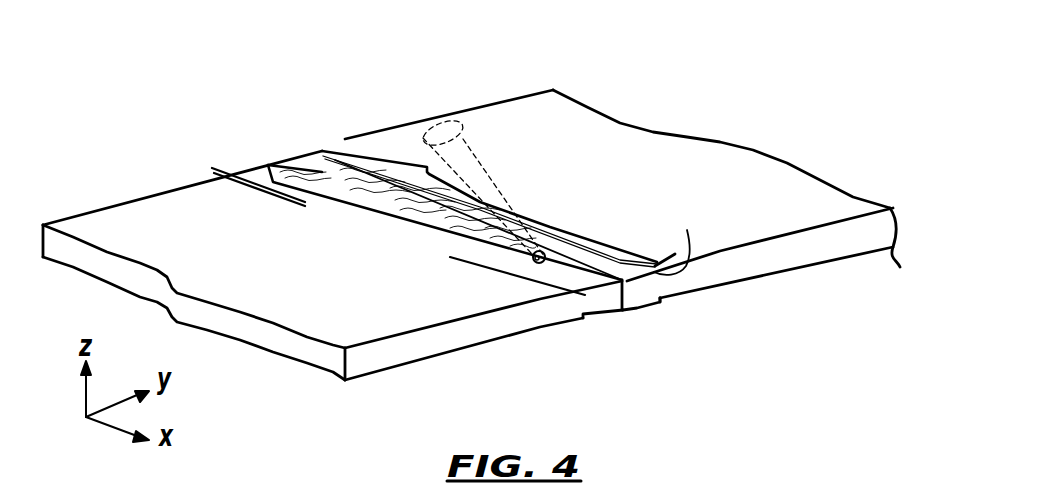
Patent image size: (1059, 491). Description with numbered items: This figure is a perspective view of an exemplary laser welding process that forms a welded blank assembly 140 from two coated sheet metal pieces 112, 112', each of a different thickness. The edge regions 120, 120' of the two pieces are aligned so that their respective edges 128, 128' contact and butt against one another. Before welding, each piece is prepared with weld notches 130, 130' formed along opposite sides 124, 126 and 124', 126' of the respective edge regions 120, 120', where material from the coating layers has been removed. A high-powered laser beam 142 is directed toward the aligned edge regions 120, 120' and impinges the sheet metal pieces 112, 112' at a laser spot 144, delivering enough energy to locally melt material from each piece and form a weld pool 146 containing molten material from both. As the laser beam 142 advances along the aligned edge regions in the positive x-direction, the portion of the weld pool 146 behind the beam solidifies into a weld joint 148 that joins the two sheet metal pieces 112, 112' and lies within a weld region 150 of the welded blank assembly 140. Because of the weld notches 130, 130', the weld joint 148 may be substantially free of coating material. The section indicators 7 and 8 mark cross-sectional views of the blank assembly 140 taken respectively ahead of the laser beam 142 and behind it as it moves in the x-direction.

The coated sheet metal piece 112 is at (622, 185).
The coated sheet metal piece 112' is at (332, 253).
The edge region 120 is at (679, 334).
The edge region 120' is at (556, 328).
The side 124 is at (790, 198).
The side 124' is at (180, 216).
The side 126 is at (776, 289).
The side 126' is at (459, 381).
The edge 128 is at (632, 220).
The edge 128' is at (625, 340).
The weld notch 130 is at (682, 233).
The weld notch 130' is at (527, 348).
The welded blank assembly 140 is at (700, 78).
The laser beam 142 is at (468, 150).
The laser spot 144 is at (545, 250).
The weld pool 146 is at (500, 258).
The weld joint 148 is at (305, 172).
The weld region 150 is at (409, 178).
The section line 7- 7 is at (667, 252).
The section line 8- 8 is at (256, 137).